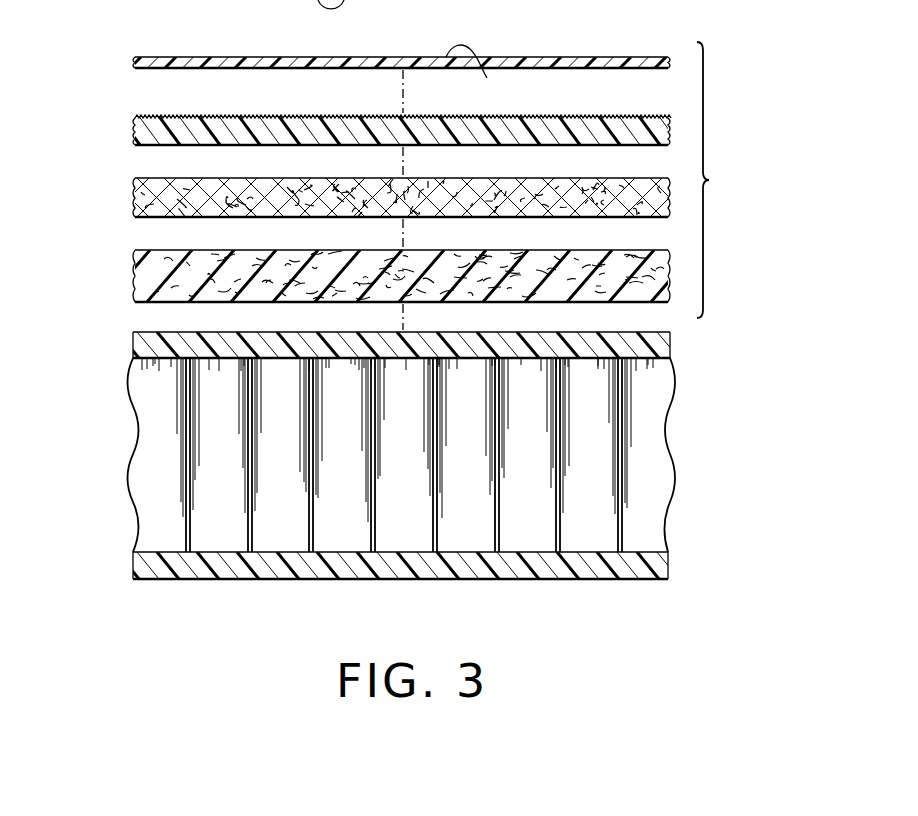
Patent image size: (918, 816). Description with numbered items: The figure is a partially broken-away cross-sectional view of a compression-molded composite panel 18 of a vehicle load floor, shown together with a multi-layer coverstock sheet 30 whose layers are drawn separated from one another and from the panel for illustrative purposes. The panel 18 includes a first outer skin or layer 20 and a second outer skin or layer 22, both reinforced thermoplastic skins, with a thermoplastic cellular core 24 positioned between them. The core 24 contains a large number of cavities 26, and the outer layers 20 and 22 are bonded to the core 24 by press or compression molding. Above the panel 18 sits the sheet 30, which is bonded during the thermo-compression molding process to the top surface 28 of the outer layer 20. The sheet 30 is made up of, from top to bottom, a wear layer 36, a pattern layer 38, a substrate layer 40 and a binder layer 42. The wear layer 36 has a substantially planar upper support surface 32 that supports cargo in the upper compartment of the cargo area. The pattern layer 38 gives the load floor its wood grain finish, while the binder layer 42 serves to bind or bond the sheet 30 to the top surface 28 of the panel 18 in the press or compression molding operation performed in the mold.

The compression-molded composite panel 18 is at (628, 580).
The first outer skin 20 is at (672, 346).
The second outer skin 22 is at (676, 568).
The core 24 is at (670, 463).
The cavities 26 is at (564, 612).
The top surface 28 is at (207, 331).
The multi-layer coverstock sheet 30 is at (722, 180).
The upper support surface 32 is at (487, 78).
The wear layer 36 is at (136, 61).
The pattern layer 38 is at (136, 131).
The substrate layer 40 is at (136, 200).
The binder layer 42 is at (136, 275).